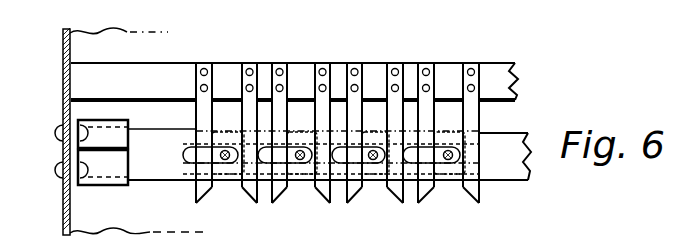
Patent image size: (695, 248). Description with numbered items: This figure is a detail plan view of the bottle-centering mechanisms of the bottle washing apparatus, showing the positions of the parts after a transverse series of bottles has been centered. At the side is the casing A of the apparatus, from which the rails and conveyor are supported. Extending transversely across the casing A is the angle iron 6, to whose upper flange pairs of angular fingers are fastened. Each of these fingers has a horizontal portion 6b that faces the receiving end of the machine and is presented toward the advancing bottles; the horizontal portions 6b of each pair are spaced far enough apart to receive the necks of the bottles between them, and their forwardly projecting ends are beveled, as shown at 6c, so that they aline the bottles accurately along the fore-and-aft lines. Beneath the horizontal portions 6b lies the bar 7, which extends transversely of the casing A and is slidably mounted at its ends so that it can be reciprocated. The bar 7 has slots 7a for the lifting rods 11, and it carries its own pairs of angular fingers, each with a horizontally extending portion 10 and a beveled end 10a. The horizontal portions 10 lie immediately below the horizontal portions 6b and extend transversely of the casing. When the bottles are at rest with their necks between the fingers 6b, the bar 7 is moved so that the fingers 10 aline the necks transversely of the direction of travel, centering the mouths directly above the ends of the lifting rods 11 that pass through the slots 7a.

The casing A is at (62, 103).
The angle iron 6 is at (158, 75).
The horizontal portion 6b is at (242, 118).
The beveled end 6c is at (206, 199).
The bar 7 is at (293, 152).
The slot 7a is at (192, 157).
The horizontally extending portion 10 is at (307, 180).
The beveled end 10a is at (285, 175).
The lifting rod 11 is at (225, 161).